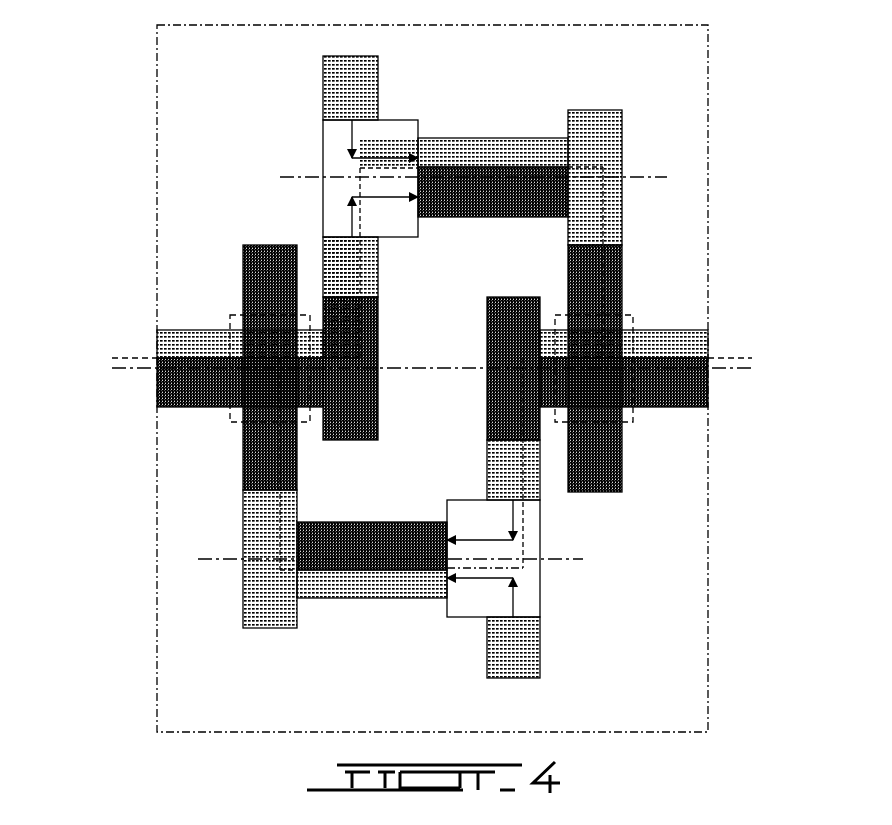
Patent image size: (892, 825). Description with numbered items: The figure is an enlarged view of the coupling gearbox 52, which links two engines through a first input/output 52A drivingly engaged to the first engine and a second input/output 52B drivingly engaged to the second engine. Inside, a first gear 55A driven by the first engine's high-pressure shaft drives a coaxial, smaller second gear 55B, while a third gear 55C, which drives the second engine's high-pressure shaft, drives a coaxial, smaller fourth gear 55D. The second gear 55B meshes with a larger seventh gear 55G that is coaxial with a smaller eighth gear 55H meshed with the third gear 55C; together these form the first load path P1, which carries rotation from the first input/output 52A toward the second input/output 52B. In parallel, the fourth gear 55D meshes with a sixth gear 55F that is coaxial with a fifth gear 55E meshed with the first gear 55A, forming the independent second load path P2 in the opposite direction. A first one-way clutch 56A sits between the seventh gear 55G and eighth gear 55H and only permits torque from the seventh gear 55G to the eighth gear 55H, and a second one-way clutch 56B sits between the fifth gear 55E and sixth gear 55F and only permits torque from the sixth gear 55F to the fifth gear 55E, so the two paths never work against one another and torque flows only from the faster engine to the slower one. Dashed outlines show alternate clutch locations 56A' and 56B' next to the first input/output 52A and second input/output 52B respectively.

The coupling gearbox 52 is at (748, 203).
The first input/output 52A is at (175, 383).
The second input/output 52B is at (690, 390).
The first load path P1 is at (622, 252).
The second load path P2 is at (280, 432).
The first gear 55A is at (267, 282).
The second gear 55B is at (345, 330).
The third gear 55C is at (598, 448).
The fourth gear 55D is at (510, 320).
The fifth gear 55E is at (273, 595).
The sixth gear 55F is at (505, 650).
The seventh gear 55G is at (335, 73).
The eighth gear 55H is at (610, 130).
The first one-way clutch 56A is at (420, 142).
The second one-way clutch 56B is at (573, 558).
The alternate location of first one-way clutch 56A' is at (160, 378).
The alternate location of second one-way clutch 56B' is at (675, 366).